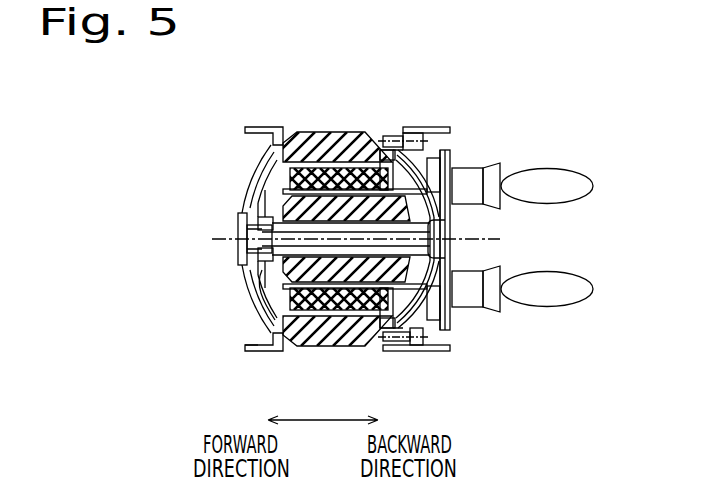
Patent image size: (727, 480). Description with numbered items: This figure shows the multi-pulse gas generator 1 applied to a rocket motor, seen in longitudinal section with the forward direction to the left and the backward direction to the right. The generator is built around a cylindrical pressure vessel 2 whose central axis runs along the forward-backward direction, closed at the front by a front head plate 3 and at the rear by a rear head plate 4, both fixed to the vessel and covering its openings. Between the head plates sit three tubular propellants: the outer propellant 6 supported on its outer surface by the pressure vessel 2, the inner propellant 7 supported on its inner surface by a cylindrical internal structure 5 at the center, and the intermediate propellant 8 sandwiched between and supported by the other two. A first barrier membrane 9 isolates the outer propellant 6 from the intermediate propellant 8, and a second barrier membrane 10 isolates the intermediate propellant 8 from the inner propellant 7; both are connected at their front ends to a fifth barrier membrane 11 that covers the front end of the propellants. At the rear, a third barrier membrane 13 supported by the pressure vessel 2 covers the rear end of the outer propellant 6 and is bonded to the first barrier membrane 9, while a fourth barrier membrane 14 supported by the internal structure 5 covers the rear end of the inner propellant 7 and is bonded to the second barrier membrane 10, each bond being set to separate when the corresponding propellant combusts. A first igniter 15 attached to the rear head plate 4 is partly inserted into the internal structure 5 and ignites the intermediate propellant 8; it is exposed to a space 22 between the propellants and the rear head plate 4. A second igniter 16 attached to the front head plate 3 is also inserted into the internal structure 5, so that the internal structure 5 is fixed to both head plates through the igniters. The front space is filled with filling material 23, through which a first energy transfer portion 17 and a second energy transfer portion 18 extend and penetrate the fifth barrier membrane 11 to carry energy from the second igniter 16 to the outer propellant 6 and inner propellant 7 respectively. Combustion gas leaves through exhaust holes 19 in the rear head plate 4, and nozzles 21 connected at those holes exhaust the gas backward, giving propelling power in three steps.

The multi-pulse gas generator 1 is at (568, 107).
The pressure vessel 2 is at (283, 131).
The front head plate 3 is at (269, 159).
The rear head plate 4 is at (412, 133).
The internal structure 5 is at (441, 262).
The outer propellant 6 is at (362, 131).
The inner propellant 7 is at (437, 233).
The intermediate propellant 8 is at (395, 162).
The first barrier membrane 9 is at (307, 167).
The second barrier membrane 10 is at (338, 193).
The fifth barrier membrane 11 is at (281, 196).
The third barrier membrane 13 is at (385, 155).
The fourth barrier membrane 14 is at (407, 192).
The first igniter 15 is at (372, 244).
The second igniter 16 is at (252, 245).
The first energy transfer portion 17 is at (262, 187).
The second energy transfer portion 18 is at (269, 298).
The exhaust holes 19 is at (448, 300).
The nozzles 21 is at (478, 178).
The space 22 is at (404, 332).
The filling material 23 is at (258, 346).